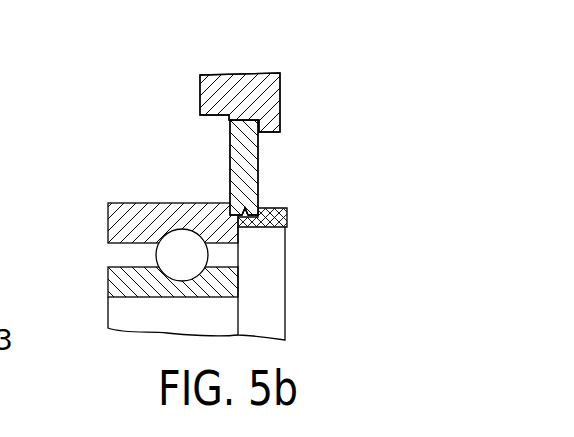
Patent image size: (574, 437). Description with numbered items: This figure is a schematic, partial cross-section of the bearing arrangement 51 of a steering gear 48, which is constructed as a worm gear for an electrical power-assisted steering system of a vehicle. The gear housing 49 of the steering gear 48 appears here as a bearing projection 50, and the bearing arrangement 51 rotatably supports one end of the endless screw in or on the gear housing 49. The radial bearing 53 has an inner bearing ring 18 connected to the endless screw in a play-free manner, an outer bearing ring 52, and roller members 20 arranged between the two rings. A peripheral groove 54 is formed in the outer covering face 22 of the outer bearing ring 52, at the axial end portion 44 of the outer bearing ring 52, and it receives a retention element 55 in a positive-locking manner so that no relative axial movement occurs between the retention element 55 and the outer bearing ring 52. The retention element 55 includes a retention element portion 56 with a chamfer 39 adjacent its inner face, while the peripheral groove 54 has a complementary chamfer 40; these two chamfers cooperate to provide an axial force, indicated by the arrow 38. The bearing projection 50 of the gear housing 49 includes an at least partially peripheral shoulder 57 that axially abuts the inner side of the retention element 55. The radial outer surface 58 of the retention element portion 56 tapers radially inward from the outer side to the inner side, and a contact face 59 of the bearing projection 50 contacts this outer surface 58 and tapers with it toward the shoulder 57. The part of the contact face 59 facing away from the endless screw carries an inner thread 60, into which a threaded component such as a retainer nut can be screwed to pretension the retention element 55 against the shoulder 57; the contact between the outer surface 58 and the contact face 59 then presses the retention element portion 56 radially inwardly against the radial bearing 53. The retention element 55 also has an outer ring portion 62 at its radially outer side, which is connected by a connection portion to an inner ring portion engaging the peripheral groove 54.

The inner bearing ring 18 is at (128, 280).
The roller members 20 is at (157, 257).
The outer covering face 22 is at (136, 221).
The arrow 38 is at (340, 163).
The chamfer 39 is at (280, 220).
The chamfer 40 is at (287, 212).
The axial end portion 44 is at (285, 216).
The steering gear 48 is at (143, 58).
The gear housing 49 is at (290, 92).
The bearing projection 50 is at (276, 88).
The bearing arrangement 51 is at (80, 170).
The outer bearing ring 52 is at (112, 223).
The radial bearing 53 is at (97, 207).
The peripheral groove 54 is at (247, 216).
The retention element 55 is at (220, 143).
The retention element portion 56 is at (260, 196).
The shoulder 57 is at (282, 121).
The radial outer surface 58 is at (243, 121).
The contact face 59 is at (229, 121).
The inner thread 60 is at (200, 113).
The outer ring portion 62 is at (200, 114).